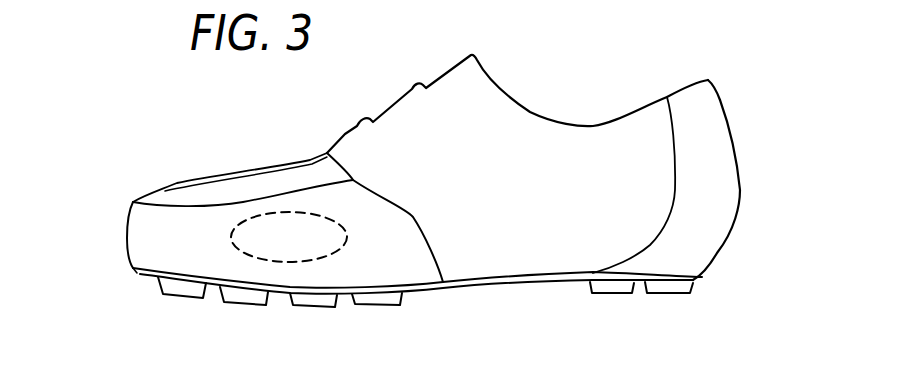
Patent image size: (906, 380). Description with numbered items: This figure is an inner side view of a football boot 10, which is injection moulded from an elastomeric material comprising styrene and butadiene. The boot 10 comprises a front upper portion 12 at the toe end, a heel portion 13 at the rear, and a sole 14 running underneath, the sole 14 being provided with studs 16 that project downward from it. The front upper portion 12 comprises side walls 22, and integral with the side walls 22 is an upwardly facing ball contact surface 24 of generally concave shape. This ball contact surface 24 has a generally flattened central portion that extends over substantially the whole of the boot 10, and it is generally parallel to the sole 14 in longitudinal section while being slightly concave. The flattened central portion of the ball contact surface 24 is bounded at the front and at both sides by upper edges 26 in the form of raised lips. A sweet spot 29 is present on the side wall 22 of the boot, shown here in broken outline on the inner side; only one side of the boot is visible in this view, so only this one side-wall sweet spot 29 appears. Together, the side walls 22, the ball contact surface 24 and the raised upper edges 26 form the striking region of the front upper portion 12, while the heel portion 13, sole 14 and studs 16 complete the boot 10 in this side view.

The boot 10 is at (137, 137).
The front upper portion 12 is at (225, 152).
The heel portion 13 is at (741, 183).
The sole 14 is at (147, 274).
The studs 16 is at (317, 299).
The side walls 22 is at (138, 230).
The ball contact surface 24 is at (180, 193).
The upper edges 26 is at (197, 180).
The sweet spot 29 is at (306, 252).